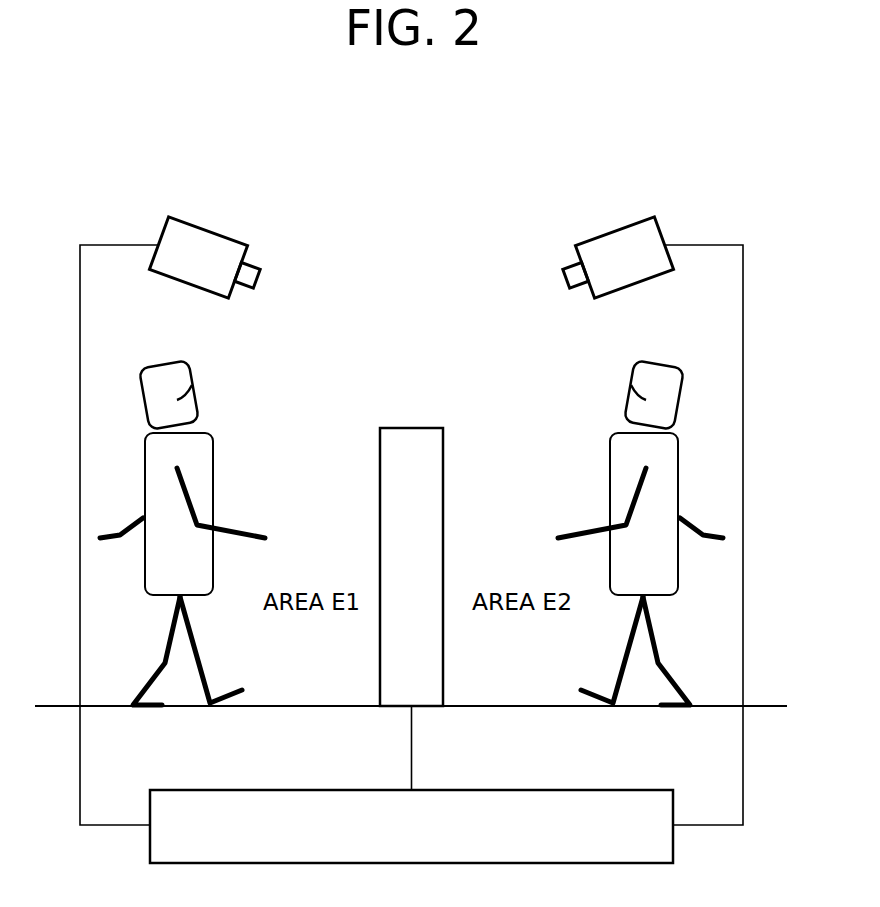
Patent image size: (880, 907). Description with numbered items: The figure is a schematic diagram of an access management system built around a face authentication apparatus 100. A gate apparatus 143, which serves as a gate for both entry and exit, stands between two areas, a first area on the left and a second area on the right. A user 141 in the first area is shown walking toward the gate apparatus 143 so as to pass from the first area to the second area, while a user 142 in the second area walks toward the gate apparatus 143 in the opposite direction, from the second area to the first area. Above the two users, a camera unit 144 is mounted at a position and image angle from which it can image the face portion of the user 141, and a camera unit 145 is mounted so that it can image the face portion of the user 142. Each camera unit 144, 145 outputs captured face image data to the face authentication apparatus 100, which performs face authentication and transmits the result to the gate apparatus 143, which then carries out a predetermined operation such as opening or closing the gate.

The face authentication apparatus 100 is at (628, 789).
The user 141 is at (172, 361).
The user 142 is at (667, 363).
The gate apparatus 143 is at (443, 468).
The camera unit 144 is at (615, 230).
The camera unit 145 is at (207, 230).